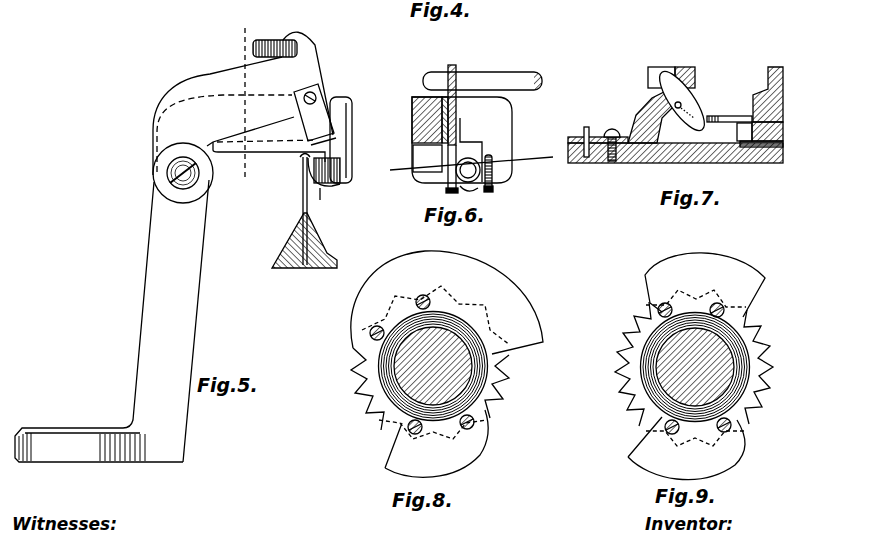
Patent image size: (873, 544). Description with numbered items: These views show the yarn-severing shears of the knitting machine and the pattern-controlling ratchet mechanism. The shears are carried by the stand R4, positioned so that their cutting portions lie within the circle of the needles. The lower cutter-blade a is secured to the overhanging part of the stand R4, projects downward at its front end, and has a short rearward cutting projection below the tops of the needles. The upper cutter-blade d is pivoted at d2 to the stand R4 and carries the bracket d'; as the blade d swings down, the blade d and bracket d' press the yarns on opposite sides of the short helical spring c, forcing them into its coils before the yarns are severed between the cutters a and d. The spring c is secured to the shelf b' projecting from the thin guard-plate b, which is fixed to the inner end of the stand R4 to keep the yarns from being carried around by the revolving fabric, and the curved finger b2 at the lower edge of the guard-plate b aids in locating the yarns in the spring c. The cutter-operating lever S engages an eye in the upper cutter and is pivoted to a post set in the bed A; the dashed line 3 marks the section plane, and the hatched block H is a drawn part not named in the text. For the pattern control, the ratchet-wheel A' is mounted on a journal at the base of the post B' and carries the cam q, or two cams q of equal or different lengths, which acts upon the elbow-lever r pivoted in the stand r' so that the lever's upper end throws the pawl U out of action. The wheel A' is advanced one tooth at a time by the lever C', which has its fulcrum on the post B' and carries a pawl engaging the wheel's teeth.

In FIG. 5, the section line 3 3 is at (245, 103).
In FIG. 5, the cutter-operating lever S is at (275, 40).
In FIG. 6, the cutter-operating lever S is at (482, 81).
In FIG. 5, the stand R4 is at (174, 247).
In FIG. 6, the stand R4 is at (451, 140).
In FIG. 5, the pivot d2 is at (183, 172).
In FIG. 5, the upper cutter-blade d is at (308, 108).
In FIG. 6, the upper cutter-blade d is at (460, 129).
In FIG. 5, the bracket d' is at (323, 131).
In FIG. 6, the bracket d' is at (483, 150).
In FIG. 5, the lower cutter-blade a is at (340, 196).
In FIG. 6, the lower cutter-blade a is at (447, 190).
In FIG. 5, the guard-plate b is at (350, 140).
In FIG. 6, the guard-plate b is at (494, 125).
In FIG. 5, the curved finger b2 is at (303, 168).
In FIG. 6, the curved finger b2 is at (494, 187).
In FIG. 5, the helical spring c is at (324, 166).
In FIG. 6, the helical spring c is at (468, 166).
In FIG. 5, the shelf b' is at (321, 202).
In FIG. 6, the shelf b' is at (472, 196).
In FIG. 5, the hatched block H is at (272, 267).
In FIG. 7, the bed A is at (675, 154).
In FIG. 7, the stand r' is at (651, 116).
In FIG. 7, the elbow-lever r is at (682, 100).
In FIG. 7, the pawl U is at (679, 77).
In FIG. 7, the cam q is at (729, 109).
In FIG. 8, the cam q is at (447, 364).
In FIG. 9, the cam q is at (696, 366).
In FIG. 7, the ratchet-wheel A' is at (745, 133).
In FIG. 8, the ratchet-wheel A' is at (438, 389).
In FIG. 9, the ratchet-wheel A' is at (704, 364).
In FIG. 7, the post B' is at (778, 94).
In FIG. 8, the post B' is at (433, 366).
In FIG. 9, the post B' is at (695, 367).
In FIG. 7, the lever C' is at (776, 146).